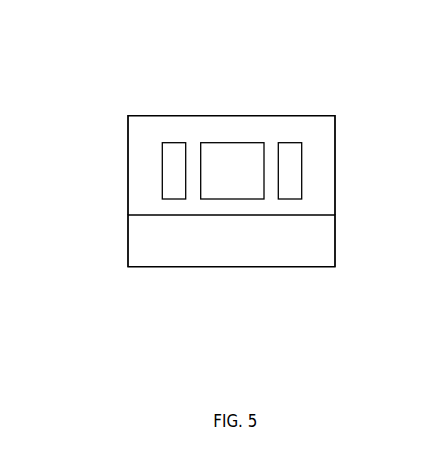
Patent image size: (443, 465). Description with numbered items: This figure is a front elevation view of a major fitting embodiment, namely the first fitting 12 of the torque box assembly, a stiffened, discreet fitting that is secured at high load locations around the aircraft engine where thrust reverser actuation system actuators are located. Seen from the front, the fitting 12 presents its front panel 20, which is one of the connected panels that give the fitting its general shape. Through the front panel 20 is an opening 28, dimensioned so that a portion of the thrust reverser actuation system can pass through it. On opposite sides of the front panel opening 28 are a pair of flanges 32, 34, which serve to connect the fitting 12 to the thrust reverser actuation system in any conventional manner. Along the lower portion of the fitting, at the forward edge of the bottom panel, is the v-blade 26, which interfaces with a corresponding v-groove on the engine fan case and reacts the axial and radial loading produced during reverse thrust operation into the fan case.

The first fitting 12 is at (221, 127).
The front panel 20 is at (150, 128).
The v-blade 26 is at (237, 255).
The front panel opening 28 is at (208, 187).
The flange 32 is at (162, 196).
The flange 34 is at (293, 188).